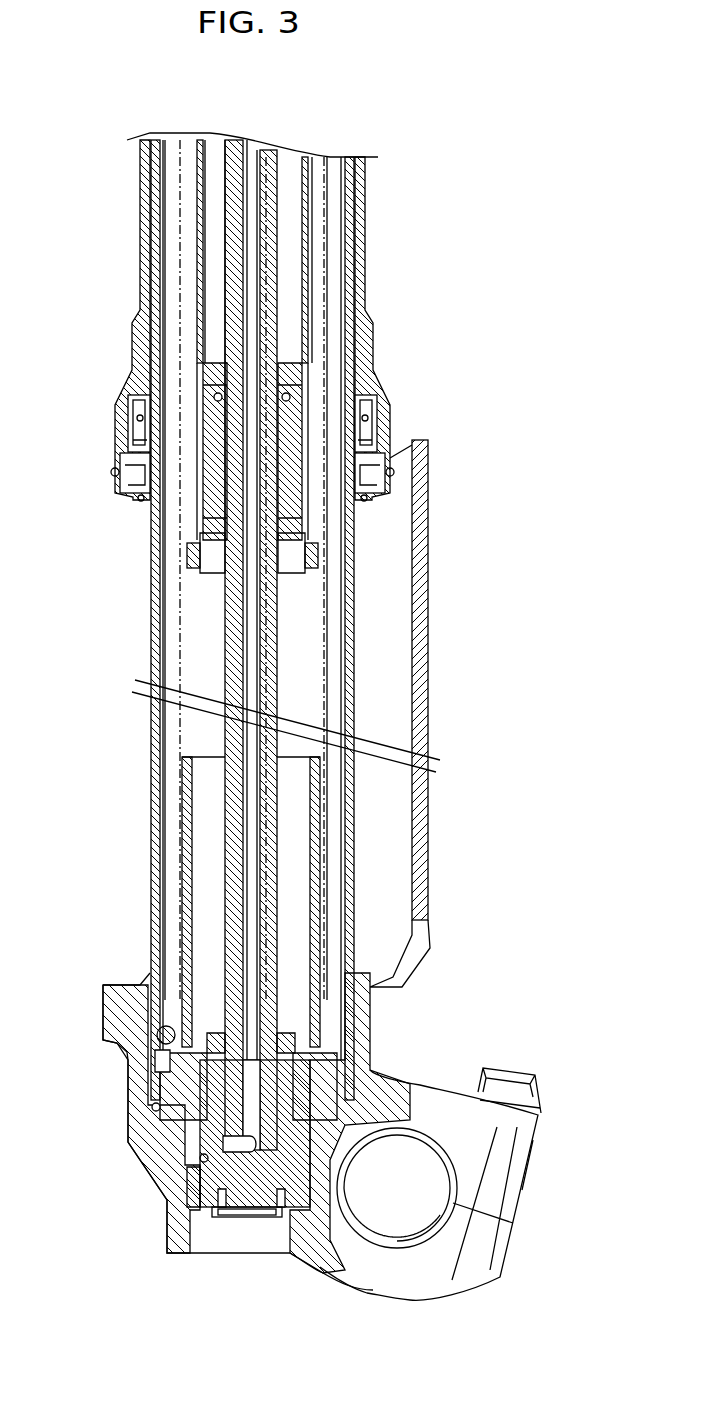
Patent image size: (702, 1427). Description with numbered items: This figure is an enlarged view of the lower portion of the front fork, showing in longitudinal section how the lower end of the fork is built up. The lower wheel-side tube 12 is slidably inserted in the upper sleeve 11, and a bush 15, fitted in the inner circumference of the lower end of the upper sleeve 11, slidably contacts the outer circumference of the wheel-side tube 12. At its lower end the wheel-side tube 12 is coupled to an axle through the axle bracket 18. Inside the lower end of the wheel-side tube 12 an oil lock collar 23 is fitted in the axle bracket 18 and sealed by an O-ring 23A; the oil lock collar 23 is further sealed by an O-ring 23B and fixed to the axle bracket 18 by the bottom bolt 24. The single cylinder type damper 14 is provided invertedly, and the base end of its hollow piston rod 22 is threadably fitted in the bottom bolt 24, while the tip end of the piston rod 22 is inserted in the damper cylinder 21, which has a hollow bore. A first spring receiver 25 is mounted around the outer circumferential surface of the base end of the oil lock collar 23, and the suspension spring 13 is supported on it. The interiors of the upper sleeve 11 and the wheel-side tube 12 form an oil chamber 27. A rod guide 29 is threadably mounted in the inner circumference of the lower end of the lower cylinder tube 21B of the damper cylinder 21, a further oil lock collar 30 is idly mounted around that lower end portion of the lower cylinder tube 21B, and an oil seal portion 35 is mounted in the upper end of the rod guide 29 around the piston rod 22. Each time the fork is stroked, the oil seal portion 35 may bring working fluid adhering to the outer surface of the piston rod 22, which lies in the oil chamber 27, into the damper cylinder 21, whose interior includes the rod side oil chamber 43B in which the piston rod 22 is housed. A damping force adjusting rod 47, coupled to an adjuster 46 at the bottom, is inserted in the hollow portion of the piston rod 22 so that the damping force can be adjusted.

The upper sleeve 11 is at (138, 172).
The wheel-side tube 12 is at (150, 893).
The suspension spring 13 is at (158, 1038).
The single cylinder type damper 14 is at (214, 150).
The bush 15 is at (150, 365).
The axle bracket 18 is at (527, 1122).
The damper cylinder 21 is at (195, 208).
The lower cylinder tube 21B is at (195, 283).
The piston rod 22 is at (222, 642).
The oil lock collar 23 is at (183, 822).
The O-ring 23A is at (153, 1107).
The O-ring 23B is at (201, 1158).
The bottom bolt 24 is at (193, 1177).
The first spring receiver 25 is at (157, 1060).
The oil chamber 27 is at (195, 612).
The rod guide 29 is at (387, 469).
The oil lock collar 30 is at (318, 550).
The oil seal portion 35 is at (288, 398).
The rod side oil chamber 43B is at (297, 245).
The adjuster 46 is at (243, 1192).
The damping force adjusting rod 47 is at (255, 200).